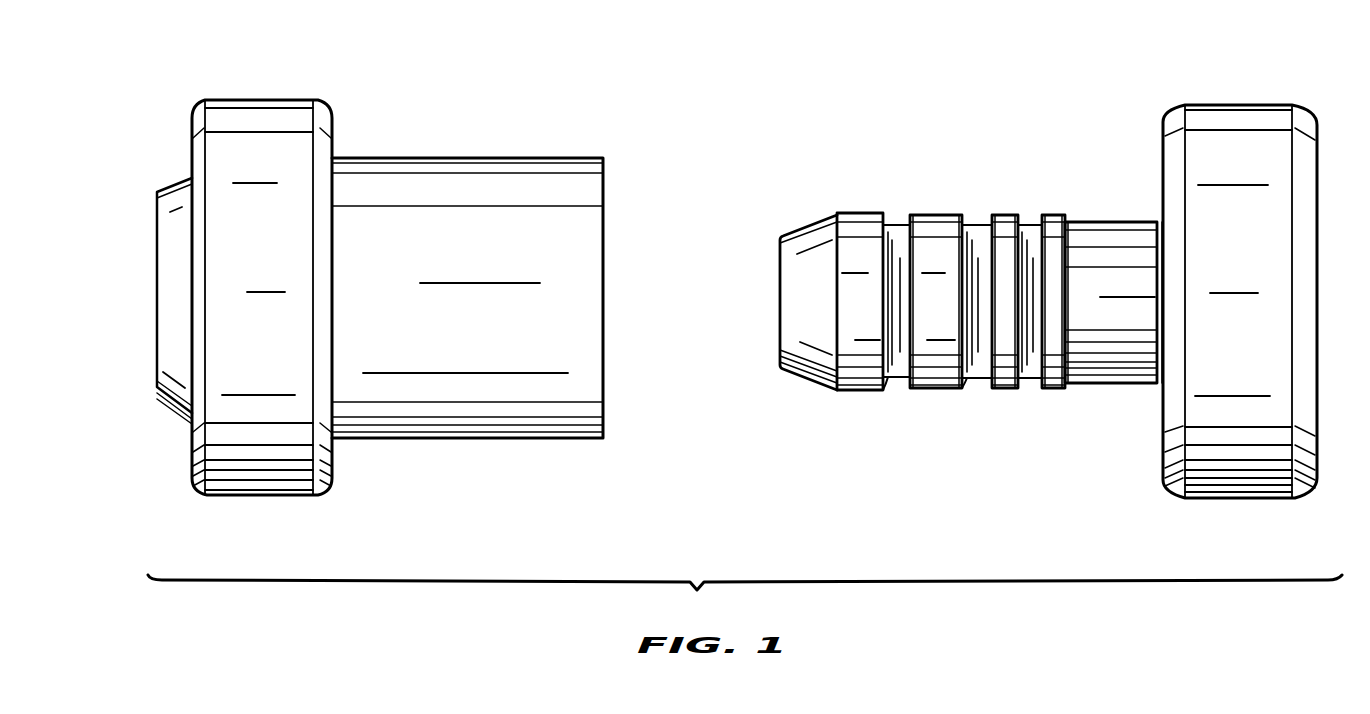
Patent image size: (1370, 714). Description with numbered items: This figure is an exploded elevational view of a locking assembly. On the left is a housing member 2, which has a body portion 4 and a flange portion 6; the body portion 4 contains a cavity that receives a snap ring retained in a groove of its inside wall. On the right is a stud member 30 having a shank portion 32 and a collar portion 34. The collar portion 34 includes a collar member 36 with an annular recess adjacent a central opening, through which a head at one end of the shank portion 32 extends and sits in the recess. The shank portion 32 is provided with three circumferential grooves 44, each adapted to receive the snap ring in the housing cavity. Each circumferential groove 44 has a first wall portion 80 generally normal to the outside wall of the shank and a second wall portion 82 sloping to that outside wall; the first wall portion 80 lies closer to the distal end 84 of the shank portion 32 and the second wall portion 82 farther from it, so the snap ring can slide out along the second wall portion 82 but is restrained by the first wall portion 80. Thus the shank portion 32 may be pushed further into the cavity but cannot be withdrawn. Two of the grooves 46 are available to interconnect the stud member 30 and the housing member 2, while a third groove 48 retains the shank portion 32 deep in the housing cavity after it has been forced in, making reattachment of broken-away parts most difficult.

The housing member 2 is at (412, 82).
The body portion 4 is at (505, 158).
The flange portion 6 is at (248, 100).
The stud member 30 is at (930, 112).
The shank portion 32 is at (866, 213).
The collar portion 34 is at (1252, 105).
The collar member 36 is at (1227, 105).
The circumferential groove 44 is at (890, 225).
The grooves 46 is at (905, 380).
The third groove 48 is at (1038, 380).
The first wall portion 80 is at (891, 389).
The second wall portion 82 is at (980, 386).
The distal end 84 is at (780, 290).